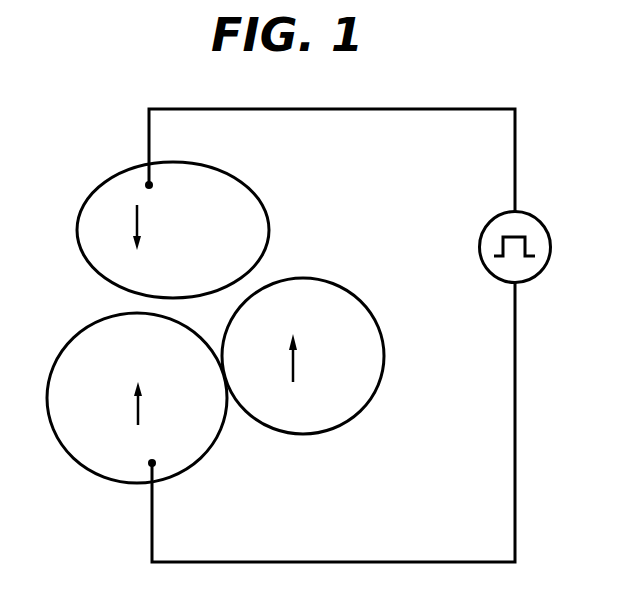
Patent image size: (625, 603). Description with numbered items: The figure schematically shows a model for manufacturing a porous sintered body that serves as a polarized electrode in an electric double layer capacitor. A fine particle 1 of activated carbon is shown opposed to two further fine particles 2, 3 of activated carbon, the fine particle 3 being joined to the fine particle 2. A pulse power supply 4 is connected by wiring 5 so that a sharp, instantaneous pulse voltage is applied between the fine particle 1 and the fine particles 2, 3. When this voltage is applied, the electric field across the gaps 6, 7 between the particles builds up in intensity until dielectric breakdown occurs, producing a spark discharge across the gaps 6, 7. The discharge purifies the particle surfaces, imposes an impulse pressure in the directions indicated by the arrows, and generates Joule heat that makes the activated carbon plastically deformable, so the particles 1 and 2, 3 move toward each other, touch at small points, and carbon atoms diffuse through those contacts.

The fine particle of activated carbon 1 is at (99, 190).
The fine particle of activated carbon 2 is at (48, 388).
The fine particle of activated carbon 3 is at (338, 418).
The pulse power supply 4 is at (551, 250).
The circuit wiring 5 is at (330, 335).
The gap 6 is at (248, 281).
The gap 7 is at (117, 299).